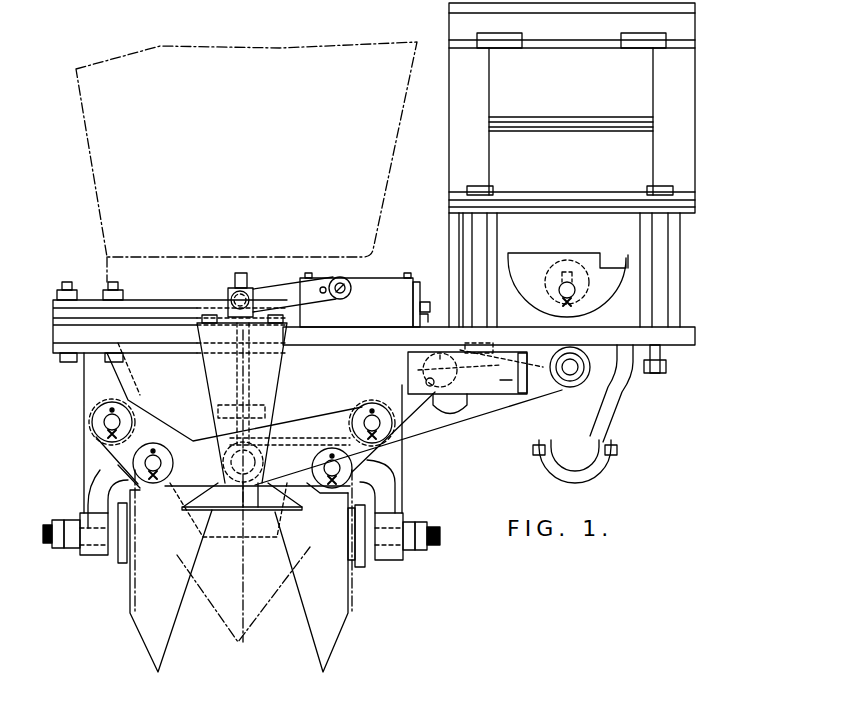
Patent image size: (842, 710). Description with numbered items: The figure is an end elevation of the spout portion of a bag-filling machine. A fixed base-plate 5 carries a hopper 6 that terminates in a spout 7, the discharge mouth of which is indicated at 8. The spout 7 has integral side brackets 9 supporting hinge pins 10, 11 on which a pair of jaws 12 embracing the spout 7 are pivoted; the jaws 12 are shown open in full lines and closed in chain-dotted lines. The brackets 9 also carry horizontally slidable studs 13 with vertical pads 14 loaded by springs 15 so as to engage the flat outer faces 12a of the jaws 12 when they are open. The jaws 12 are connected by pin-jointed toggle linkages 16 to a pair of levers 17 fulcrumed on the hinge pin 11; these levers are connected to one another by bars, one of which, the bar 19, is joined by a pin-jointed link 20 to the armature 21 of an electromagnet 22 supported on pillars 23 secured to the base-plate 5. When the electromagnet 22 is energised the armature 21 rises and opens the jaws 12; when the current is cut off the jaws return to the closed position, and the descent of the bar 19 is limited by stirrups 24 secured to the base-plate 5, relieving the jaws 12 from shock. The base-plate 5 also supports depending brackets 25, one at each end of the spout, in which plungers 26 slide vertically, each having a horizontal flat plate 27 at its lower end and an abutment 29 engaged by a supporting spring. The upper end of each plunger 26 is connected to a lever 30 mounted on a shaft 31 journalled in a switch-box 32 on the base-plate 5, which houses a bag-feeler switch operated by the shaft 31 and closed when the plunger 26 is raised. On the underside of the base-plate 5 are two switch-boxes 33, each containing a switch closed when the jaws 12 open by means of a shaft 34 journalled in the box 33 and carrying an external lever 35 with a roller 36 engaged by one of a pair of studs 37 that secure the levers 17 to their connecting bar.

The base-plate 5 is at (60, 340).
The hopper 6 is at (98, 166).
The spout 7 is at (107, 377).
The discharge mouth 8 is at (205, 530).
The side brackets 9 is at (84, 478).
The hinge pin 10 is at (106, 423).
The hinge pin 11 is at (377, 428).
The jaws 12 is at (140, 642).
The flat outer faces 12a is at (130, 607).
The studs 13 is at (48, 545).
The pads 14 is at (118, 560).
The springs 15 is at (106, 545).
The toggle linkages 16 is at (193, 442).
The levers 17 is at (488, 408).
The bar 19 is at (571, 375).
The link 20 is at (578, 320).
The armature 21 is at (600, 262).
The electromagnet 22 is at (672, 114).
The pillars 23 is at (478, 278).
The stirrups 24 is at (603, 476).
The depending brackets 25 is at (284, 350).
The plungers 26 is at (243, 500).
The flat plate 27 is at (258, 503).
The abutment 29 is at (270, 408).
The lever 30 is at (262, 290).
The shaft 31 is at (322, 294).
The switch-box 32 is at (387, 280).
The switch-boxes 33 is at (505, 387).
The shaft 34 is at (428, 378).
The external lever 35 is at (437, 351).
The roller 36 is at (445, 330).
The studs 37 is at (452, 415).